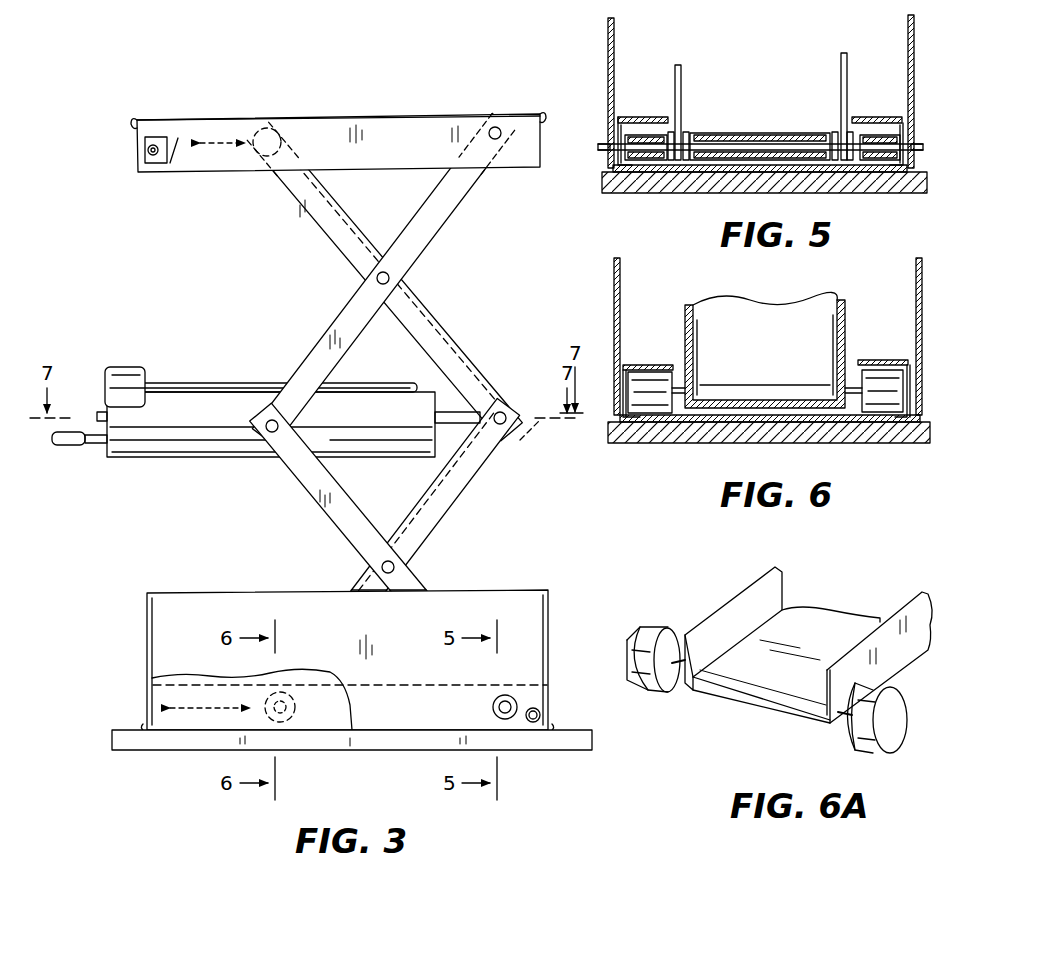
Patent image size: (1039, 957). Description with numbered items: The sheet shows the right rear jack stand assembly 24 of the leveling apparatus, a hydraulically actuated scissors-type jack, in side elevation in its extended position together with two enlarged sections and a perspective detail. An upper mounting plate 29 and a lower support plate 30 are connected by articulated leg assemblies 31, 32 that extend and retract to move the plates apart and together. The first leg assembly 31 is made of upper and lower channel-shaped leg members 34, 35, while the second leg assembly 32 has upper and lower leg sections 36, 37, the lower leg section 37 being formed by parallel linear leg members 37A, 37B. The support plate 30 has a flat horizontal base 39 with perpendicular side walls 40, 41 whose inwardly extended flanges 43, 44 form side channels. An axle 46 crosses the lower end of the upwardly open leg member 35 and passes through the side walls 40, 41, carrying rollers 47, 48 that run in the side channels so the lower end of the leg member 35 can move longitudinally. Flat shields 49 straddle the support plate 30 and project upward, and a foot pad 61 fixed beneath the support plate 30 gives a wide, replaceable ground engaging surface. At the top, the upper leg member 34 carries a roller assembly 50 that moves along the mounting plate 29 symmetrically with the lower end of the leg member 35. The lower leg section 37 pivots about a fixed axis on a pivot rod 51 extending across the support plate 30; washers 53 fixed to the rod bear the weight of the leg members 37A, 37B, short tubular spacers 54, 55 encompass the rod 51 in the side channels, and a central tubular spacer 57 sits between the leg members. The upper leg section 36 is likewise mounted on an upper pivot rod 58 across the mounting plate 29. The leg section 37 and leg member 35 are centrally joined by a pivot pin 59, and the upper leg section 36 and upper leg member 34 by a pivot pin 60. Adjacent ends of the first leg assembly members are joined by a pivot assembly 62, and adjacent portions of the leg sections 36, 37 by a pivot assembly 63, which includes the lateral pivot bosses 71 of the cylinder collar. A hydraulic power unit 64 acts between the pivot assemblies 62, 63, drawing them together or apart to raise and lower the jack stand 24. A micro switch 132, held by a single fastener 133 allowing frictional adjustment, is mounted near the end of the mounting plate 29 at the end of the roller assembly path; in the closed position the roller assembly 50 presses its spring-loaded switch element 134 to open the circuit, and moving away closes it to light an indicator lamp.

In FIG. 3, the jack stand assembly 24 is at (192, 78).
In FIG. 3, the mounting plate 29 is at (368, 128).
In FIG. 3, the support plate 30 is at (168, 700).
In FIG. 5, the support plate 30 is at (868, 178).
In FIG. 6, the support plate 30 is at (668, 428).
In FIG. 3, the first leg assembly 31 is at (478, 480).
In FIG. 3, the second leg assembly 32 is at (298, 487).
In FIG. 3, the upper leg member 34 is at (440, 313).
In FIG. 3, the lower leg member 35 is at (440, 512).
In FIG. 6A, the lower leg member 35 is at (903, 640).
In FIG. 3, the upper leg section 36 is at (340, 325).
In FIG. 3, the lower leg section 37 is at (326, 505).
In FIG. 5, the leg member 37A is at (847, 62).
In FIG. 5, the leg member 37B is at (677, 75).
In FIG. 6, the base 39 is at (875, 425).
In FIG. 5, the side wall 40 is at (616, 128).
In FIG. 6, the side wall 40 is at (623, 395).
In FIG. 5, the side wall 41 is at (908, 128).
In FIG. 6, the side wall 41 is at (913, 385).
In FIG. 5, the flange 43 is at (642, 117).
In FIG. 6, the flange 43 is at (655, 365).
In FIG. 5, the flange 44 is at (871, 117).
In FIG. 6, the flange 44 is at (880, 360).
In FIG. 6, the axle 46 is at (740, 395).
In FIG. 6A, the axle 46 is at (755, 680).
In FIG. 6, the roller 47 is at (650, 408).
In FIG. 6A, the roller 47 is at (668, 630).
In FIG. 6, the roller 48 is at (903, 380).
In FIG. 6A, the roller 48 is at (872, 748).
In FIG. 3, the shield 49 is at (540, 620).
In FIG. 5, the shield 49 is at (608, 30).
In FIG. 6, the shield 49 is at (614, 282).
In FIG. 3, the roller assembly 50 is at (272, 126).
In FIG. 3, the pivot rod 51 is at (512, 702).
In FIG. 5, the pivot rod 51 is at (712, 144).
In FIG. 5, the washer 53 is at (674, 133).
In FIG. 5, the tubular spacer 54 is at (650, 160).
In FIG. 5, the tubular spacer 55 is at (905, 193).
In FIG. 5, the central tubular spacer 57 is at (758, 133).
In FIG. 3, the upper pivot rod 58 is at (496, 127).
In FIG. 3, the pivot pin 59 is at (381, 567).
In FIG. 3, the pivot pin 60 is at (376, 278).
In FIG. 3, the foot pad 61 is at (530, 748).
In FIG. 5, the foot pad 61 is at (672, 193).
In FIG. 6, the foot pad 61 is at (855, 443).
In FIG. 3, the pivot assembly 62 is at (508, 405).
In FIG. 3, the pivot assembly 63 is at (252, 396).
In FIG. 3, the hydraulic power unit 64 is at (200, 462).
In FIG. 3, the pivot boss 71 is at (270, 436).
In FIG. 3, the micro switch 132 is at (148, 153).
In FIG. 3, the fastener 133 is at (160, 162).
In FIG. 3, the switch element 134 is at (176, 140).